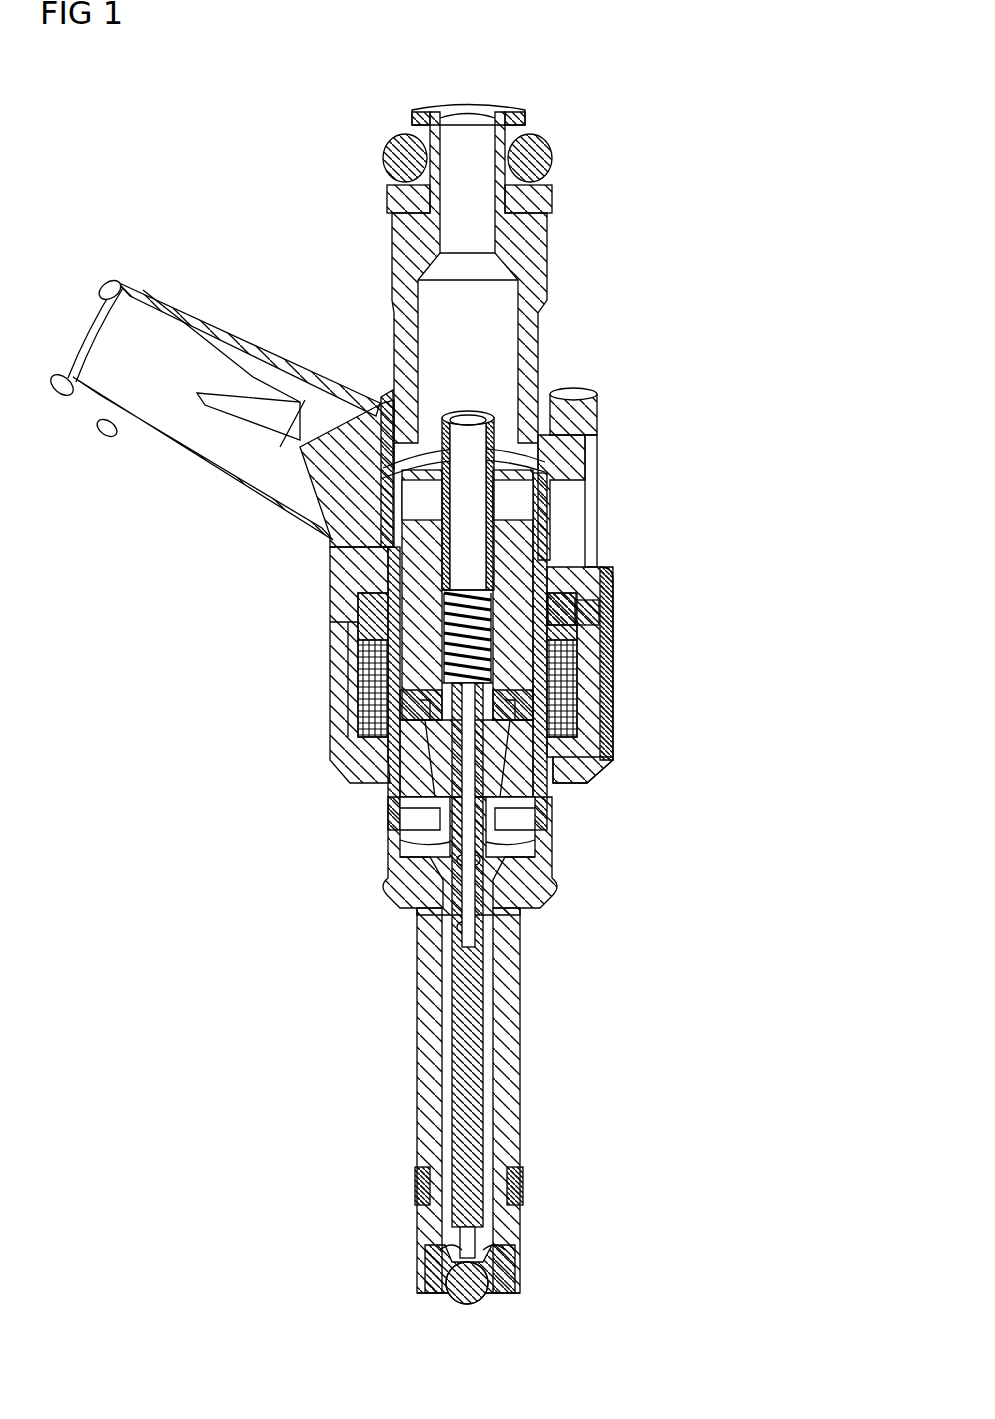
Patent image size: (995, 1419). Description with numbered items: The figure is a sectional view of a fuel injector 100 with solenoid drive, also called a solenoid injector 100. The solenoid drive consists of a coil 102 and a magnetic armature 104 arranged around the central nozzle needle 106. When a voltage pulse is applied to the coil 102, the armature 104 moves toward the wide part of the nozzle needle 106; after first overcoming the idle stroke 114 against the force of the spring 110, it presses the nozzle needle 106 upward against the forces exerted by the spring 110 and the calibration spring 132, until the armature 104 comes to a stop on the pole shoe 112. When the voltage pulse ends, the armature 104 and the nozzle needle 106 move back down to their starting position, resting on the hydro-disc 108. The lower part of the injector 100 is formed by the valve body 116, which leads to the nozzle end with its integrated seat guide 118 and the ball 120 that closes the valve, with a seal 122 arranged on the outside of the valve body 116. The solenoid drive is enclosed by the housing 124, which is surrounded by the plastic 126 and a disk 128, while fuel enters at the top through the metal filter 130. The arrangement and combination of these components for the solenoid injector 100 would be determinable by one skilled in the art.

The fuel injector 100 is at (208, 152).
The coil 102 is at (583, 698).
The armature 104 is at (590, 742).
The nozzle needle 106 is at (470, 1057).
The hydro-disc 108 is at (445, 817).
The spring 110 is at (415, 712).
The pole shoe 112 is at (400, 583).
The idle stroke 114 is at (500, 690).
The valve body 116 is at (425, 1030).
The integrated seat guide 118 is at (435, 1268).
The ball 120 is at (495, 1276).
The seal 122 is at (420, 1182).
The housing 124 is at (585, 776).
The plastic 126 is at (596, 547).
The disk 128 is at (585, 610).
The metal filter 130 is at (470, 497).
The calibration spring 132 is at (360, 652).